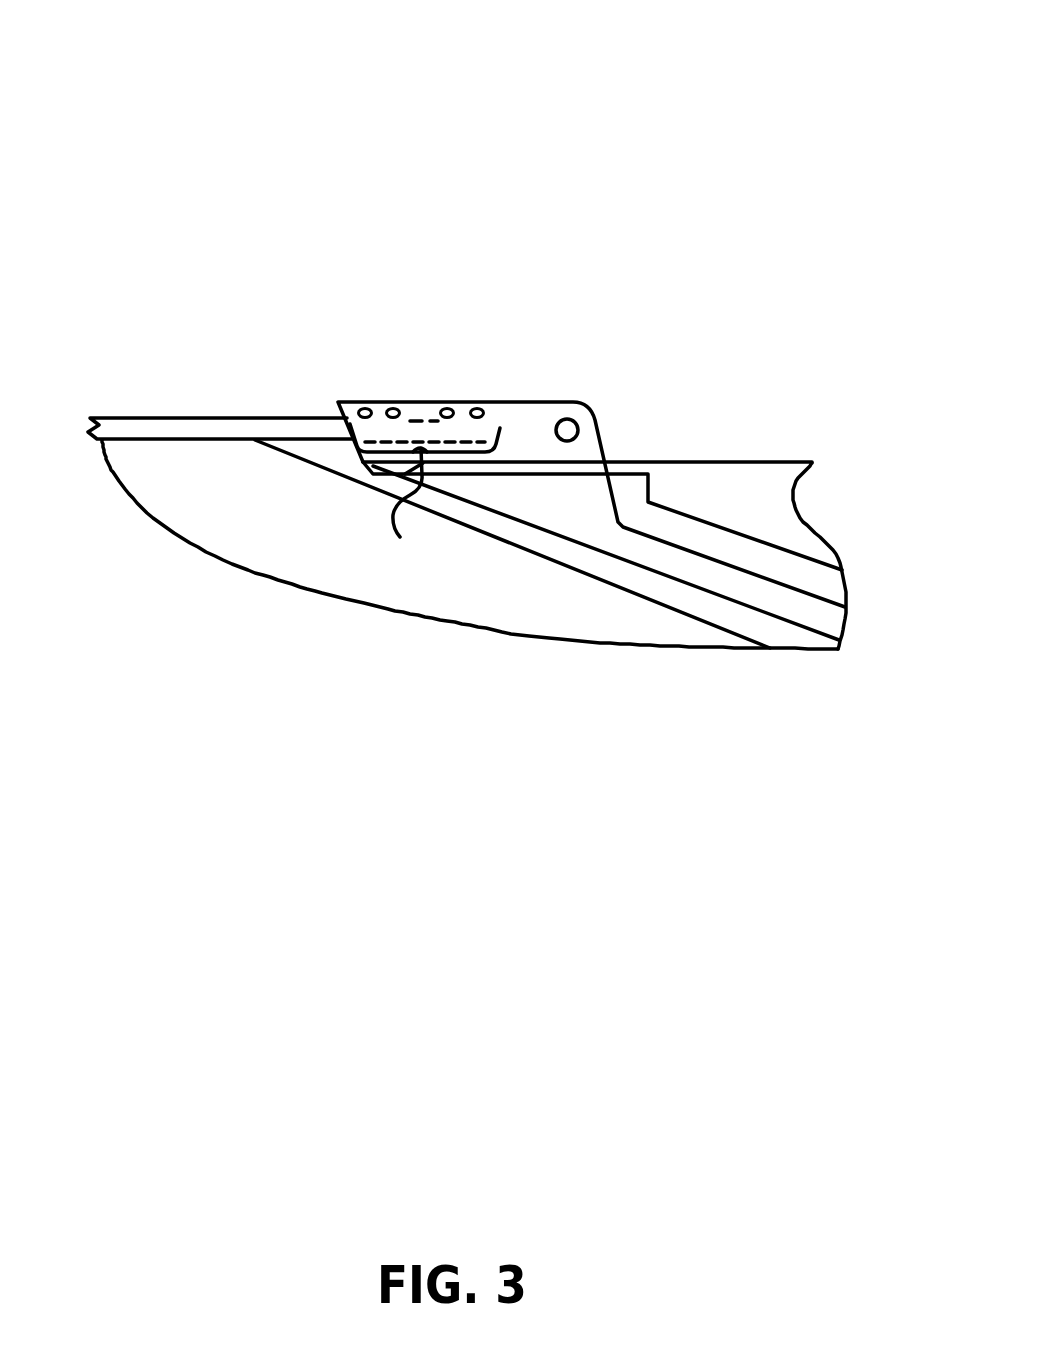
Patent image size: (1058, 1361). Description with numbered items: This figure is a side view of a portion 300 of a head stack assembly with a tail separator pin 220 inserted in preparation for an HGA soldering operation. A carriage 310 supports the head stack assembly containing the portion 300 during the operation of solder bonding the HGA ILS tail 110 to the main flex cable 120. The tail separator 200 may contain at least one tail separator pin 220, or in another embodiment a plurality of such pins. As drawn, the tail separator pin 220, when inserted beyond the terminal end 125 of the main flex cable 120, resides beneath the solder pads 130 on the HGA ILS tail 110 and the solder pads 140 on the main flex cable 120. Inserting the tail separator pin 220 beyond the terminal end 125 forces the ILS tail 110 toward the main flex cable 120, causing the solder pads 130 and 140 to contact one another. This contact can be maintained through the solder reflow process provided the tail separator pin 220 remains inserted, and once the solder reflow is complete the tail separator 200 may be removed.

The portion of a head stack assembly 300 is at (485, 40).
The HGA ILS tail 110 is at (550, 387).
The main flex cable 120 is at (163, 399).
The terminal end 125 is at (402, 507).
The solder pads 130 is at (375, 381).
The solder pads 140 is at (421, 413).
The tail separator 200 is at (822, 423).
The tail separator pin 220 is at (581, 449).
The carriage 310 is at (293, 566).